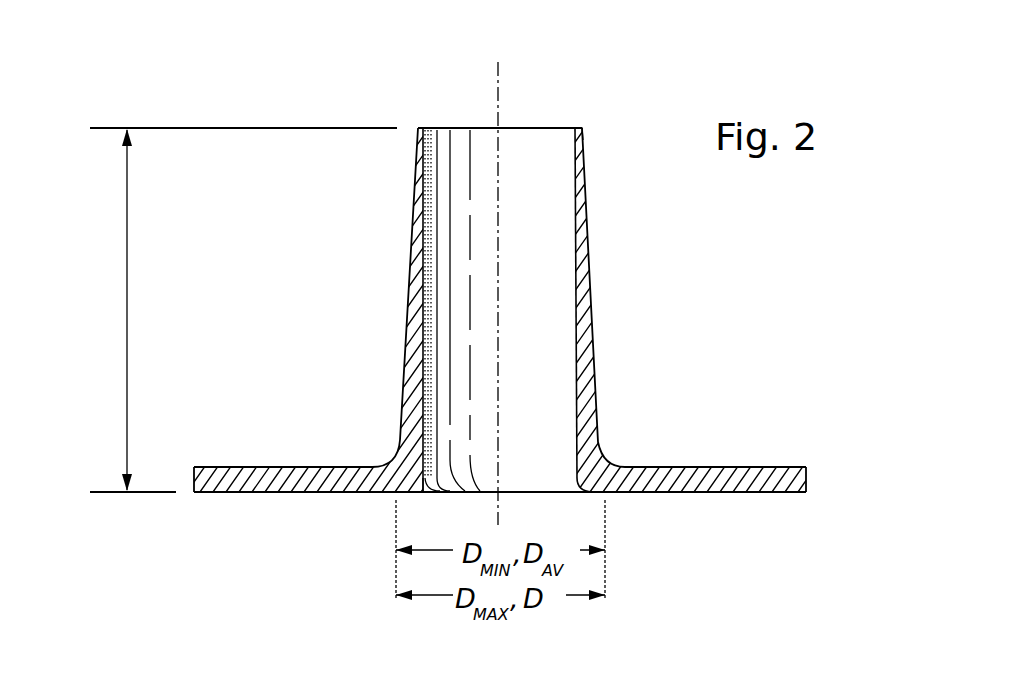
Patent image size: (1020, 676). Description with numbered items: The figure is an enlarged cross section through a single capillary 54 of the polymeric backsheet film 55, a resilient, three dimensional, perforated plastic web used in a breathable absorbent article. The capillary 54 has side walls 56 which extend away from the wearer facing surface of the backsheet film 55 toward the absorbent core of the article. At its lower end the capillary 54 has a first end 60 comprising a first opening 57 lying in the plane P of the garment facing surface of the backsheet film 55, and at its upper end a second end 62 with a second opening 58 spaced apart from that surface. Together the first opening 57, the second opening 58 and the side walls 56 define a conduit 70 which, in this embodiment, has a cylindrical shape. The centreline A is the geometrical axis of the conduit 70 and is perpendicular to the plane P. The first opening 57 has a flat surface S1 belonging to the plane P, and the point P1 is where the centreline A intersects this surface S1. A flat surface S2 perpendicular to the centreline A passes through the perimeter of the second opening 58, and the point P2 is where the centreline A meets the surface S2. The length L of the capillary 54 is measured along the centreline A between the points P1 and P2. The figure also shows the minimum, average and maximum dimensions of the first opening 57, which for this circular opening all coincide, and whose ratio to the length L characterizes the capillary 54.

The capillary 54 is at (533, 140).
The backsheet film 55 is at (740, 475).
The side walls 56 is at (413, 305).
The first opening 57 is at (560, 492).
The second opening 58 is at (438, 127).
The first end 60 is at (525, 493).
The second end 62 is at (480, 127).
The conduit 70 is at (448, 243).
The centreline A is at (500, 80).
The plane of the backsheet film P is at (700, 500).
The first point P1 is at (500, 492).
The second point P2 is at (500, 127).
The surface of the first opening S1 is at (440, 497).
The flat surface S2 is at (585, 122).
The length L is at (243, 310).